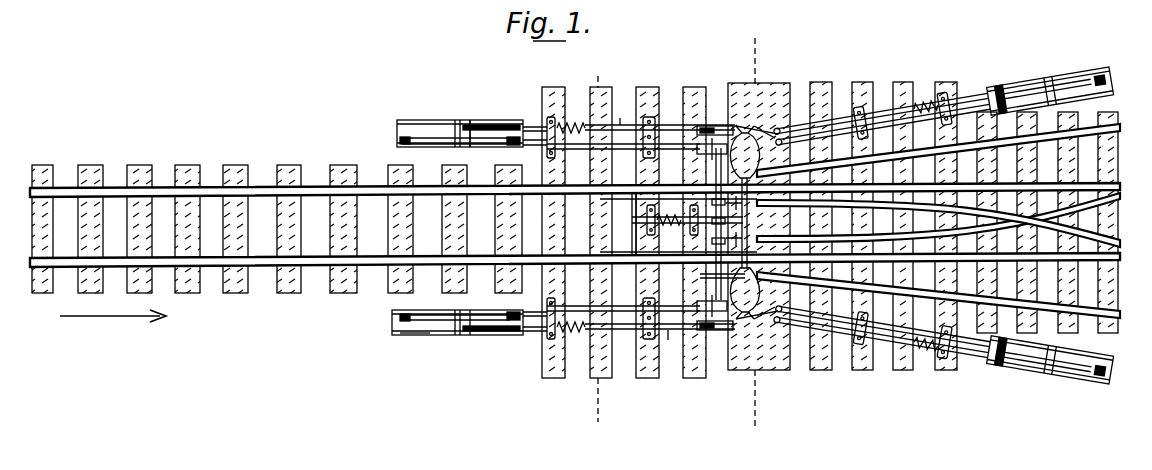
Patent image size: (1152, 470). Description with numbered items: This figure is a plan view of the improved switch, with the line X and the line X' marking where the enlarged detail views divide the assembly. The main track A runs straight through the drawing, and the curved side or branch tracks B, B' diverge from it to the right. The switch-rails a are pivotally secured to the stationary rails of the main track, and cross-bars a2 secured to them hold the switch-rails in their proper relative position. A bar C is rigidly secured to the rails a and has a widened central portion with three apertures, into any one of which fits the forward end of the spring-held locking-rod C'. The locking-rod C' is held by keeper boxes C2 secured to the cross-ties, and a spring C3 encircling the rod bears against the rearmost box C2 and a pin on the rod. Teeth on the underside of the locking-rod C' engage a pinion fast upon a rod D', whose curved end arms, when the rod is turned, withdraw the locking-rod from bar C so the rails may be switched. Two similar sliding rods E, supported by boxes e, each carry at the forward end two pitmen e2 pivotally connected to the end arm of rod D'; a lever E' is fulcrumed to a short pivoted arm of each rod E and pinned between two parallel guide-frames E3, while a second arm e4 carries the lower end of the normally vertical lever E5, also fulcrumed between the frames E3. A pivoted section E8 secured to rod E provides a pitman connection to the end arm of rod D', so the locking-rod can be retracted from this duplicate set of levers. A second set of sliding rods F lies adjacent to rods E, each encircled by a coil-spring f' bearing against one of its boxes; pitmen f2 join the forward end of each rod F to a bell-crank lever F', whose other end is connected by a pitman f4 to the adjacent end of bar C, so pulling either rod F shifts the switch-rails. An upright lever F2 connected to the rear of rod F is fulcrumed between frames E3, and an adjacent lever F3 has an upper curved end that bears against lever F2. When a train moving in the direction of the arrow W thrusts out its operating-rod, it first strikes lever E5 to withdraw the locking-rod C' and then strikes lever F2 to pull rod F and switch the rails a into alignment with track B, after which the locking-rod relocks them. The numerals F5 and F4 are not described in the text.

The main track A is at (30, 230).
The branch track B is at (951, 183).
The branch track B' is at (952, 259).
The arrow W is at (113, 325).
The section line X is at (593, 249).
The section line X' is at (755, 234).
The sliding rod E is at (830, 225).
The lever E' is at (511, 228).
The guide-frame E3 is at (458, 120).
The lever E5 is at (396, 145).
The pivoted section E8 is at (445, 333).
The cylinder F5 is at (392, 318).
The box e is at (656, 120).
The pitman e2 is at (712, 224).
The arm e4 is at (452, 142).
The sliding rod F is at (647, 227).
The bell-crank lever F' is at (754, 226).
The lever F2 is at (470, 124).
The lever F3 is at (500, 124).
The link F4 is at (767, 222).
The coil-spring f' is at (571, 223).
The pitman f2 is at (706, 126).
The pitman f4 is at (742, 330).
The switch-rail a is at (622, 186).
The cross-bar a2 is at (632, 218).
The bar C is at (689, 223).
The locking-rod C' is at (751, 224).
The keeper box C2 is at (690, 212).
The spring C3 is at (652, 205).
The rod D' is at (701, 285).